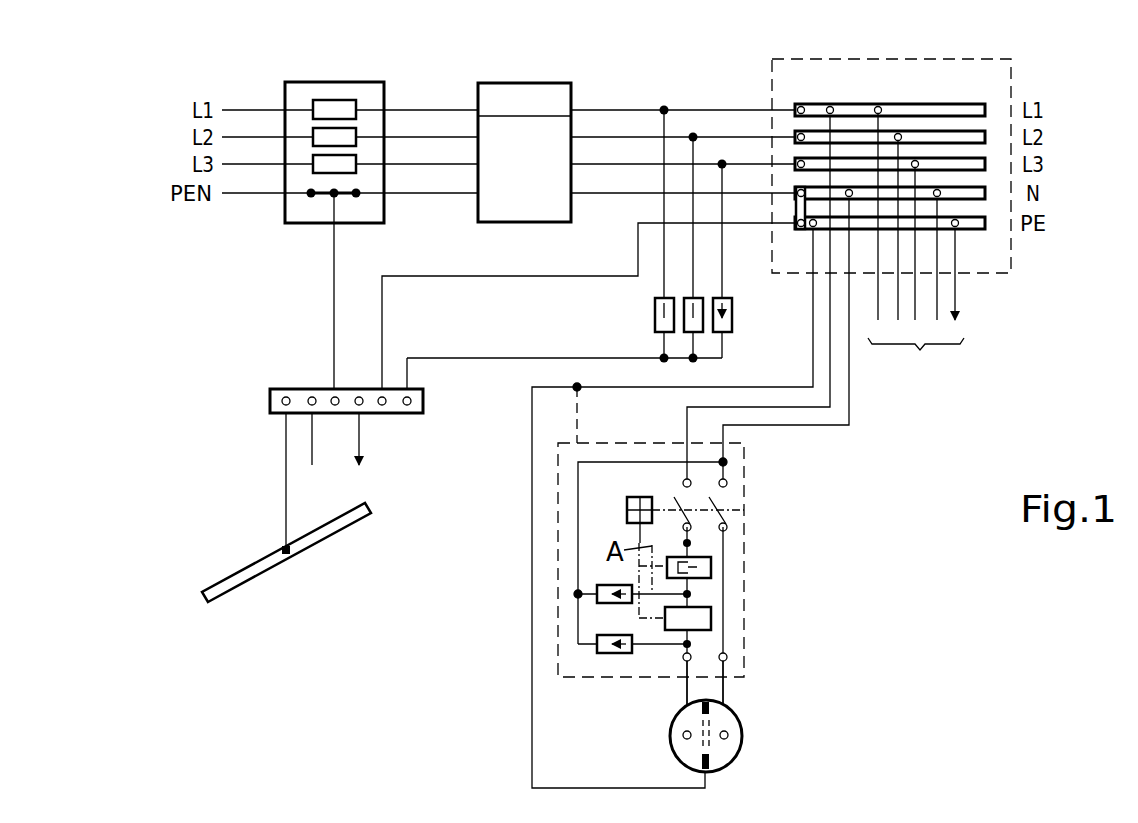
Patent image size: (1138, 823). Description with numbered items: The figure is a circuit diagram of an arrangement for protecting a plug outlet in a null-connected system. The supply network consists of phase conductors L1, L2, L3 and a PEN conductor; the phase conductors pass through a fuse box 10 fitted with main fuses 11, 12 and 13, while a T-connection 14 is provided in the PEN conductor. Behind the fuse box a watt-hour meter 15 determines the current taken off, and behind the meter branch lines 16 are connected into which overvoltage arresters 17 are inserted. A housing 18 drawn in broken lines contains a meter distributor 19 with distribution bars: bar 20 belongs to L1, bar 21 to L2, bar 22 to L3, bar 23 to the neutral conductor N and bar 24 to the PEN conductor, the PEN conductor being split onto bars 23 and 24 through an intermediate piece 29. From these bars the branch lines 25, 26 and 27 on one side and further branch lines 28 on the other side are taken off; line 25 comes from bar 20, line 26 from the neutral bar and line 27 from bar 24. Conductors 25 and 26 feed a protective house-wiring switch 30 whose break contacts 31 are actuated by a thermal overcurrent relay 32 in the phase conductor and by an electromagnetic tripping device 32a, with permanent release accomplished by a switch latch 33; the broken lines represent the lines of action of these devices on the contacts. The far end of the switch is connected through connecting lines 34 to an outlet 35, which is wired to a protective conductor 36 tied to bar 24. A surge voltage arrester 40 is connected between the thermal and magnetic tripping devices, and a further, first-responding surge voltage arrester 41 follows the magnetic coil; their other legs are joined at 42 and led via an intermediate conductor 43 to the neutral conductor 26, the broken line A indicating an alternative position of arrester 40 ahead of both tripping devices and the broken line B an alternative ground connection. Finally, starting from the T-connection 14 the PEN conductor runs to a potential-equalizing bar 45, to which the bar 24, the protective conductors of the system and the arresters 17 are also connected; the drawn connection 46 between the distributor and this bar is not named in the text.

The fuse box 10 is at (325, 90).
The main fuse 11 is at (356, 102).
The main fuse 12 is at (356, 131).
The main fuse 13 is at (356, 170).
The T-connection 14 is at (323, 200).
The watt-hour meter 15 is at (545, 90).
The branch lines 16 is at (693, 211).
The overvoltage arresters 17 is at (655, 326).
The housing 18 is at (812, 59).
The meter distributor 19 is at (904, 174).
The distribution bar 20 is at (958, 104).
The distribution bar 21 is at (983, 137).
The distribution bar 22 is at (985, 165).
The distribution bar 23 is at (985, 195).
The distribution bar 24 is at (974, 229).
The branch line 25 is at (833, 372).
The branch line 26 is at (853, 397).
The branch line 27 is at (813, 375).
The branch lines 28 is at (916, 244).
The intermediate piece 29 is at (788, 212).
The protective house-wiring switch 30 is at (744, 455).
The break contacts 31 is at (718, 503).
The thermal overcurrent relay 32 is at (711, 620).
The electromagnetic tripping device 32a is at (711, 568).
The switch latch 33 is at (627, 505).
The connecting lines 34 is at (686, 693).
The outlet 35 is at (743, 742).
The protective conductor 36 is at (712, 764).
The surge voltage arrester 40 is at (597, 600).
The surge voltage arrester 41 is at (603, 655).
The connection point 42 is at (578, 594).
The intermediate conductor 43 is at (578, 470).
The potential-equalizing bar 45 is at (272, 392).
The connecting line 46 is at (458, 276).